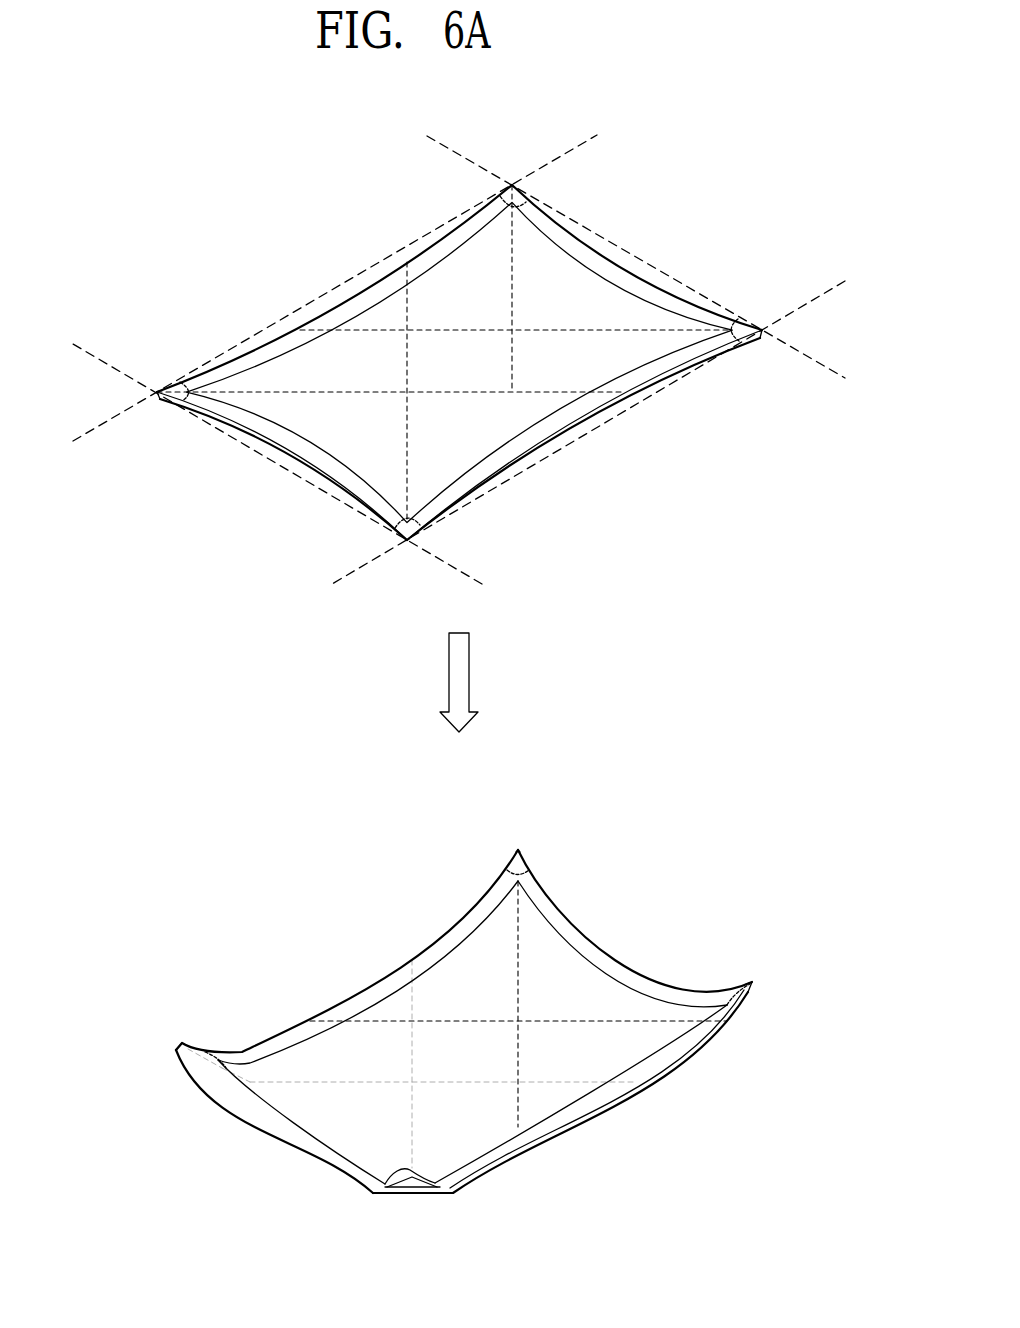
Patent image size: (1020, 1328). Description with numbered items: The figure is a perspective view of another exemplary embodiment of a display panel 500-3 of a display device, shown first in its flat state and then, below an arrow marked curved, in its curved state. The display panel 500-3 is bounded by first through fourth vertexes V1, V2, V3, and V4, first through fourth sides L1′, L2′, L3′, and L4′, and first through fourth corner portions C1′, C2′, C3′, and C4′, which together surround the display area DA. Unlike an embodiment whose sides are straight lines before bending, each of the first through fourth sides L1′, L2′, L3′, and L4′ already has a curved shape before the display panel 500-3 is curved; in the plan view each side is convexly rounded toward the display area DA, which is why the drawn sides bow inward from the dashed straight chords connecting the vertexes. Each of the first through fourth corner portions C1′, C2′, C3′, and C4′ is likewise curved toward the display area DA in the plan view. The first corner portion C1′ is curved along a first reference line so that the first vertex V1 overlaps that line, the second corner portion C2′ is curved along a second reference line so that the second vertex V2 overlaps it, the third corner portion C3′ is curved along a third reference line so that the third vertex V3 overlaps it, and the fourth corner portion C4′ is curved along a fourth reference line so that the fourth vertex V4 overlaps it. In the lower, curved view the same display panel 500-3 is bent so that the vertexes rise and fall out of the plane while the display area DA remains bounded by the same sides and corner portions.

The display panel 500-3 is at (696, 138).
The first vertex V1 is at (157, 392).
The second vertex V2 is at (512, 185).
The third vertex V3 is at (763, 330).
The fourth vertex V4 is at (407, 540).
The first corner portion C1′ is at (193, 373).
The second corner portion C2′ is at (533, 213).
The third corner portion C3′ is at (732, 327).
The fourth corner portion C4′ is at (383, 503).
The first side L1′ is at (348, 302).
The second side L2′ is at (622, 260).
The third side L3′ is at (593, 423).
The fourth side L4′ is at (293, 452).
The display area DA is at (467, 470).